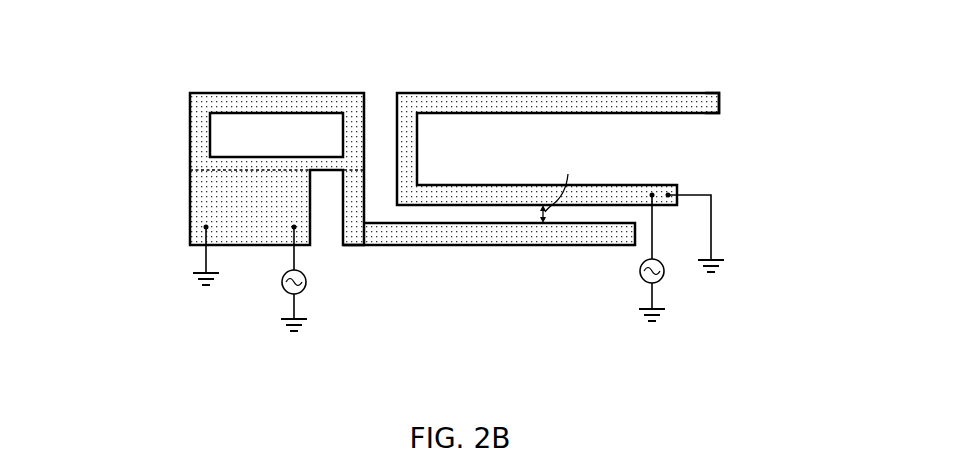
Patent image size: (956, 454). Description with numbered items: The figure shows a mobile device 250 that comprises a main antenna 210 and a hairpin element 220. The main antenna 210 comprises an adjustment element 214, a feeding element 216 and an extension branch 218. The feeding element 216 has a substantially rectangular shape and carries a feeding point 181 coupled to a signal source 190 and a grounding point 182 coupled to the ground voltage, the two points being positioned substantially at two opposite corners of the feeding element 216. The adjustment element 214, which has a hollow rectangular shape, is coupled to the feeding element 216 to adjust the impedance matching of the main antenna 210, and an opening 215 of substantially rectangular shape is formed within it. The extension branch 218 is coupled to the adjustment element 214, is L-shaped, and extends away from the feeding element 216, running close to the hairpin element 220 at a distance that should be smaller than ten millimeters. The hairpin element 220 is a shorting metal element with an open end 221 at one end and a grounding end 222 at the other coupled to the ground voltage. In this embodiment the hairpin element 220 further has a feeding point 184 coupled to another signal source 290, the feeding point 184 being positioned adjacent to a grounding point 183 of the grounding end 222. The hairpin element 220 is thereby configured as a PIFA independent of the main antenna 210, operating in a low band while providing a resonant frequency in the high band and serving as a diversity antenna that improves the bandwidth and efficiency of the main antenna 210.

The mobile device 250 is at (182, 57).
The main antenna 210 is at (502, 368).
The adjustment element 214 is at (245, 107).
The opening 215 is at (290, 128).
The feeding element 216 is at (205, 193).
The extension branch 218 is at (492, 232).
The hairpin element 220 is at (533, 103).
The open end 221 is at (719, 101).
The grounding end 222 is at (678, 190).
The feeding point 181 is at (292, 228).
The grounding point 182 is at (204, 227).
The grounding point 183 is at (668, 200).
The feeding point 184 is at (652, 190).
The signal source 190 is at (306, 282).
The signal source 290 is at (640, 271).